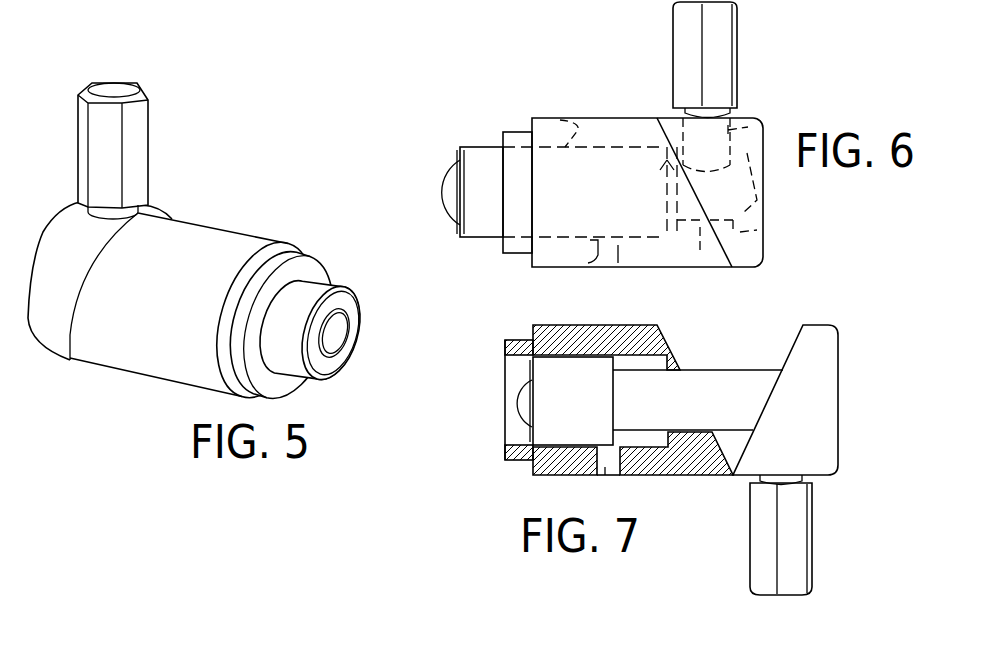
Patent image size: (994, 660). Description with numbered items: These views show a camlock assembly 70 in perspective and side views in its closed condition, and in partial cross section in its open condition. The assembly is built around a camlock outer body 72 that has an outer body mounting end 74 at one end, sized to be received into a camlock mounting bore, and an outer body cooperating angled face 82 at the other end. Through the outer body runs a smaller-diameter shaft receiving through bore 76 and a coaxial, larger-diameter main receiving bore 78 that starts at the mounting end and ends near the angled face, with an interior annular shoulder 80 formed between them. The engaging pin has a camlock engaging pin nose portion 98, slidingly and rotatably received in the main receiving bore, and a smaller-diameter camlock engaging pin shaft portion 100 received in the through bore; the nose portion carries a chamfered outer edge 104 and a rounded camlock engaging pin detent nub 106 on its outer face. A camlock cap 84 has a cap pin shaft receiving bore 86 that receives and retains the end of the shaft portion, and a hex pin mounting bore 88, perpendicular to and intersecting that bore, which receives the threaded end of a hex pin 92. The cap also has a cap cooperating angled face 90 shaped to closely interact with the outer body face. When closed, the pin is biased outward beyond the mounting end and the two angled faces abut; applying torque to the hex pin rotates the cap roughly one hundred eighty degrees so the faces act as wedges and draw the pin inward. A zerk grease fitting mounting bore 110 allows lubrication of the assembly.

In FIG. 5, the camlock assembly 70 is at (212, 246).
In FIG. 6, the camlock assembly 70 is at (598, 153).
In FIG. 7, the camlock assembly 70 is at (657, 438).
In FIG. 5, the camlock outer body 72 is at (230, 243).
In FIG. 6, the camlock outer body 72 is at (620, 122).
In FIG. 7, the camlock outer body 72 is at (550, 472).
In FIG. 5, the outer body mounting end 74 is at (308, 267).
In FIG. 6, the outer body mounting end 74 is at (503, 247).
In FIG. 7, the outer body mounting end 74 is at (503, 453).
In FIG. 6, the outer body camlock engaging pin shaft receiving through bore 76 is at (697, 267).
In FIG. 7, the outer body camlock engaging pin shaft receiving through bore 76 is at (685, 368).
In FIG. 6, the outer body camlock engaging pin main receiving bore 78 is at (560, 116).
In FIG. 6, the interior annular shoulder 80 is at (657, 173).
In FIG. 7, the interior annular shoulder 80 is at (670, 435).
In FIG. 7, the outer body cooperating angled face 82 is at (667, 342).
In FIG. 5, the camlock cap 84 is at (53, 233).
In FIG. 6, the camlock cap 84 is at (762, 160).
In FIG. 7, the camlock cap 84 is at (830, 340).
In FIG. 6, the cap pin shaft receiving bore 86 is at (763, 233).
In FIG. 7, the cap pin shaft receiving bore 86 is at (780, 365).
In FIG. 6, the hex pin mounting bore 88 is at (757, 119).
In FIG. 7, the cap cooperating angled face 90 is at (798, 342).
In FIG. 5, the hex pin 92 is at (138, 145).
In FIG. 6, the hex pin 92 is at (673, 72).
In FIG. 7, the hex pin 92 is at (757, 540).
In FIG. 6, the camlock engaging pin nose portion 98 is at (488, 158).
In FIG. 7, the camlock engaging pin nose portion 98 is at (571, 401).
In FIG. 7, the camlock engaging pin shaft portion 100 is at (723, 390).
In FIG. 6, the chamfered outer edge 104 is at (460, 148).
In FIG. 5, the camlock engaging pin detent nub 106 is at (342, 333).
In FIG. 6, the camlock engaging pin detent nub 106 is at (443, 190).
In FIG. 7, the camlock engaging pin detent nub 106 is at (515, 402).
In FIG. 6, the zerk grease fitting mounting bore 110 is at (588, 268).
In FIG. 7, the zerk grease fitting mounting bore 110 is at (605, 467).